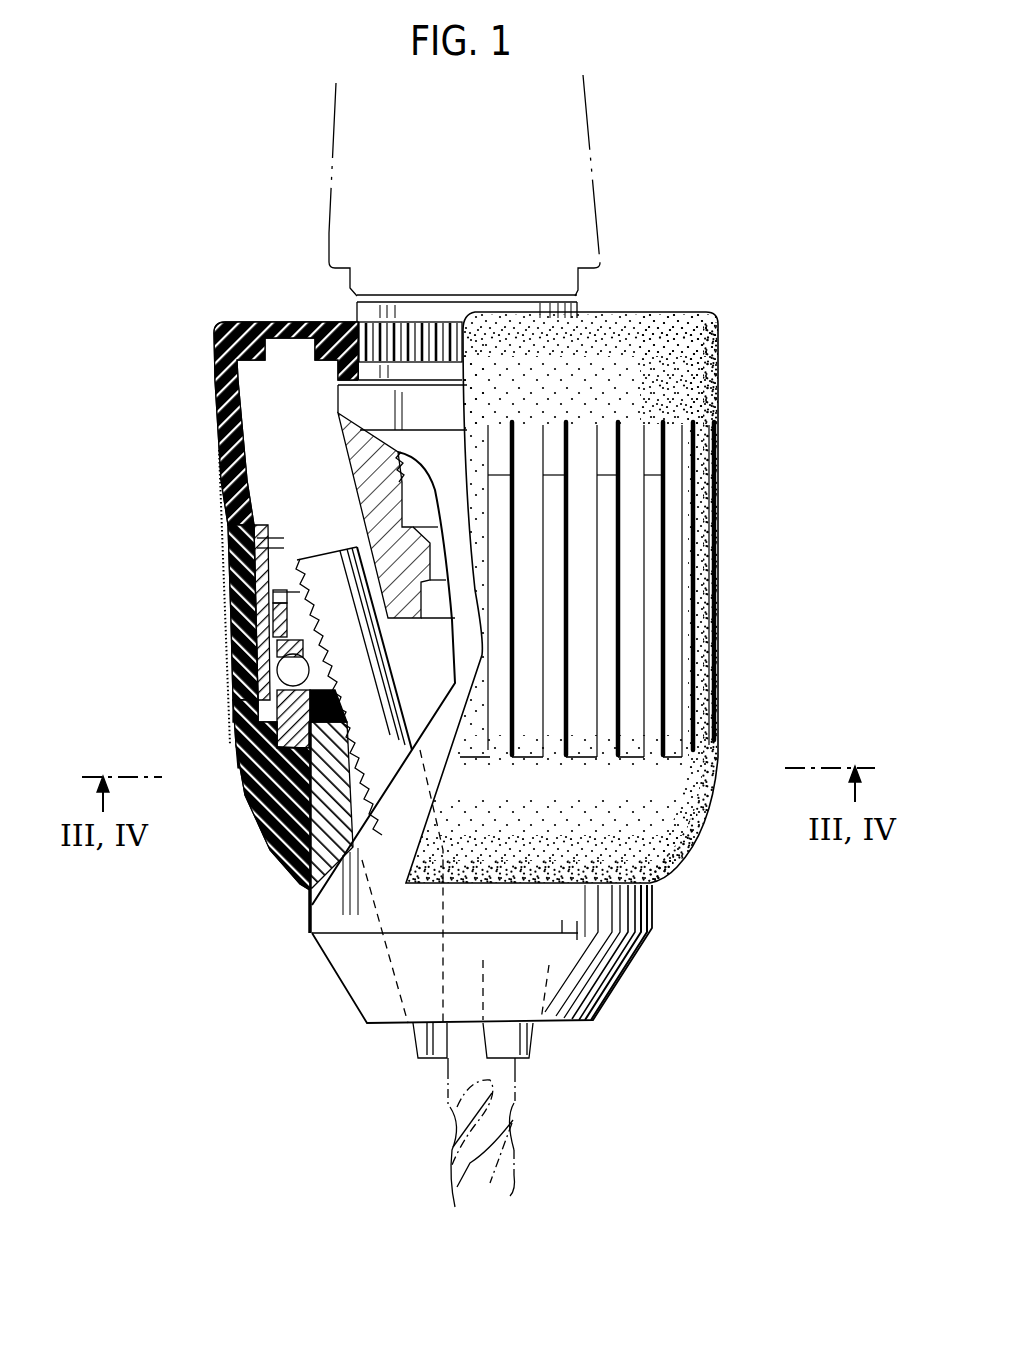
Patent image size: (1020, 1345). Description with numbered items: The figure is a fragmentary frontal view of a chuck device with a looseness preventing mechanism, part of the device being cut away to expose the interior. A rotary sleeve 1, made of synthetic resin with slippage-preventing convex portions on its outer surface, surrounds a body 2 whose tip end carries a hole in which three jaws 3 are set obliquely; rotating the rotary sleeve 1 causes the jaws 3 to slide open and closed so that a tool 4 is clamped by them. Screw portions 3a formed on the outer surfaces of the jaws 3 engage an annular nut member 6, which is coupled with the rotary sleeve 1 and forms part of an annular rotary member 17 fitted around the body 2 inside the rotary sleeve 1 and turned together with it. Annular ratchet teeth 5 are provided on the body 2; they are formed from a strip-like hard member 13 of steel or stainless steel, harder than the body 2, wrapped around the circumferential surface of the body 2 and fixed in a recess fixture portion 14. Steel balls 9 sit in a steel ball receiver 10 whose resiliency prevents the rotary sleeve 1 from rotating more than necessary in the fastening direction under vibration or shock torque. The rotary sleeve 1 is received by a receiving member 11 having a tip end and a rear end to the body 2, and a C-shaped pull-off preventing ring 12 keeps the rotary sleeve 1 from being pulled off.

The rotary sleeve 1 is at (667, 348).
The body 2 is at (323, 945).
The jaws 3 is at (413, 1045).
The screw portions 3a is at (284, 845).
The tool 4 is at (452, 1155).
The ratchet teeth 5 is at (250, 808).
The nut member 6 is at (250, 719).
The steel balls 9 is at (222, 670).
The steel ball receiver 10 is at (223, 633).
The receiving member 11 is at (250, 322).
The pull-off preventing ring 12 is at (223, 523).
The hard member 13 is at (245, 788).
The recess fixture portion 14 is at (240, 768).
The rotary member 17 is at (233, 737).